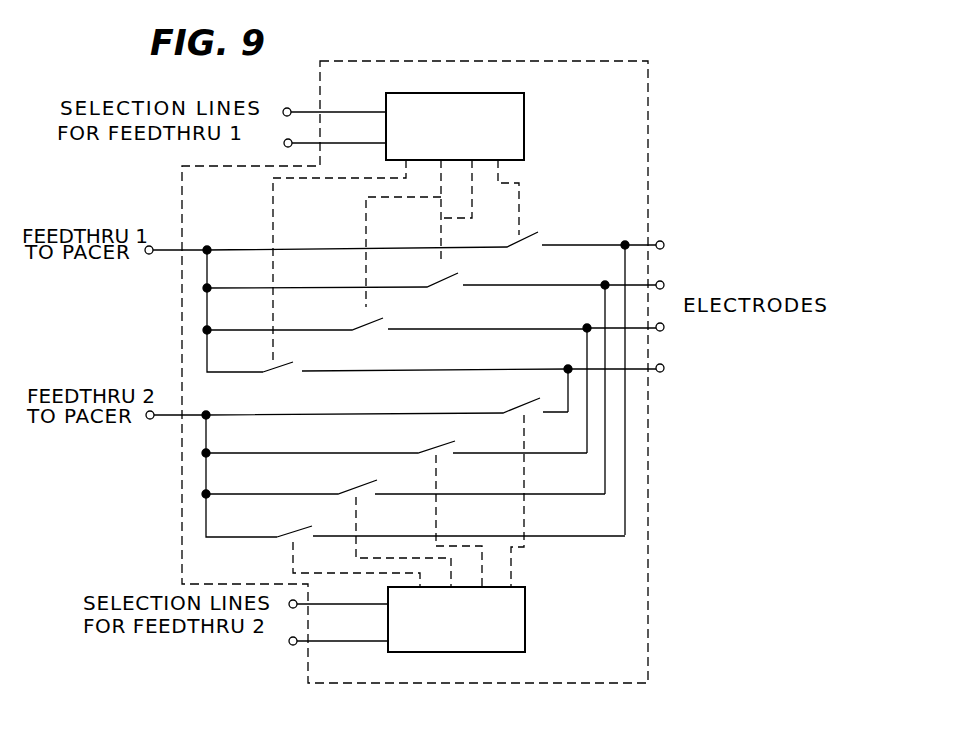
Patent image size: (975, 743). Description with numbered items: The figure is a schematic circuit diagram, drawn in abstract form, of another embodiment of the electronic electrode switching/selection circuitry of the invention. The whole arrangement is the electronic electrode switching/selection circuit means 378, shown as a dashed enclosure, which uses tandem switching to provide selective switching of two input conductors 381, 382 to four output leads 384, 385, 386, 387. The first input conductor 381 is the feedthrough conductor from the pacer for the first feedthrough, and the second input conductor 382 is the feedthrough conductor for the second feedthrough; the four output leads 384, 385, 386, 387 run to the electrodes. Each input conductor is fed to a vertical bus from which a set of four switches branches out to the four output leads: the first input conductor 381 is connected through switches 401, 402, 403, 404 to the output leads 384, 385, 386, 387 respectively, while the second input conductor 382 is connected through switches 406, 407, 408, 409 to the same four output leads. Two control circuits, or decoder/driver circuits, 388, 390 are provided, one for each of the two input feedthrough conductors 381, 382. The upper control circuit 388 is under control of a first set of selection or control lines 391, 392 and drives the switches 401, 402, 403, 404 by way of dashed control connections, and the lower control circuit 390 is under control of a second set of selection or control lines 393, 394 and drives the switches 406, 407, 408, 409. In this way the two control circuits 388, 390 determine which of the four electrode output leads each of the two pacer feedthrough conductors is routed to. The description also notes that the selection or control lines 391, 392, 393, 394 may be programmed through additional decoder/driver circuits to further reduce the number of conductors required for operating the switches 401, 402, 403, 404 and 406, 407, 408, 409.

The electronic electrode switching/selection circuit means 378 is at (649, 178).
The input conductor 381 is at (173, 249).
The input conductor 382 is at (178, 416).
The output lead 384 is at (660, 238).
The output lead 385 is at (628, 278).
The output lead 386 is at (637, 331).
The output lead 387 is at (637, 371).
The control circuit 388 is at (524, 117).
The control circuit 390 is at (485, 652).
The selection line 391 is at (300, 108).
The selection line 392 is at (286, 146).
The selection line 393 is at (368, 604).
The selection line 394 is at (332, 641).
The switch 401 is at (529, 235).
The switch 402 is at (460, 279).
The switch 403 is at (381, 321).
The switch 404 is at (292, 366).
The switch 406 is at (530, 400).
The switch 407 is at (445, 443).
The switch 408 is at (365, 484).
The switch 409 is at (300, 527).